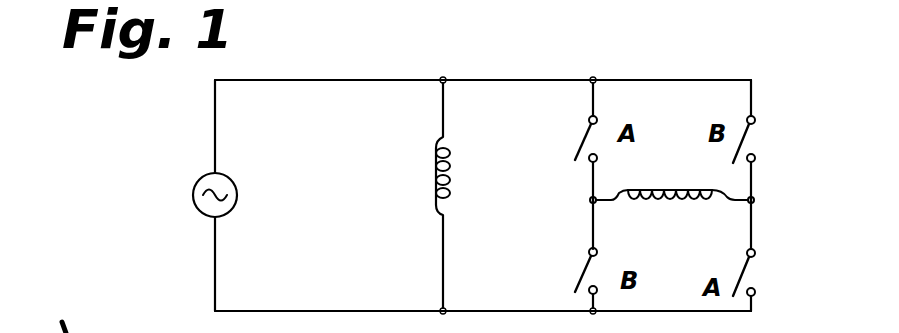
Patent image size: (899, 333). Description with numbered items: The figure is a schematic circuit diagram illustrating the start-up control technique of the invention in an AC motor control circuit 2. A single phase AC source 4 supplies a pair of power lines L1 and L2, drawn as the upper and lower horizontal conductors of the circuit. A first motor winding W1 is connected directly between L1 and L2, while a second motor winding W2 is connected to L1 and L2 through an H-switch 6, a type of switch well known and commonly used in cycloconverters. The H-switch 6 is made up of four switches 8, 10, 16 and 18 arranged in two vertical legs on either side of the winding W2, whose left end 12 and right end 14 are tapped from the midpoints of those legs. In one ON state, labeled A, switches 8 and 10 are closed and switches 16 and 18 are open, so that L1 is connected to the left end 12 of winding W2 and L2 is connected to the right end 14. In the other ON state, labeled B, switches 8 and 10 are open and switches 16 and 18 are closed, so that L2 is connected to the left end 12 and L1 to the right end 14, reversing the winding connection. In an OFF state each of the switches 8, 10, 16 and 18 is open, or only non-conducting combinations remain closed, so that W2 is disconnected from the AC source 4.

The AC motor control circuit 2 is at (300, 47).
The single phase AC source 4 is at (199, 178).
The H-switch 6 is at (763, 176).
The switch 8 is at (580, 137).
The switch 10 is at (752, 277).
The left end of winding W2 12 is at (600, 203).
The right end of winding W2 14 is at (747, 204).
The switch 16 is at (752, 139).
The switch 18 is at (587, 263).
The first motor winding W1 is at (434, 178).
The second motor winding W2 is at (668, 190).
The power line L1 is at (483, 67).
The power line L2 is at (483, 322).